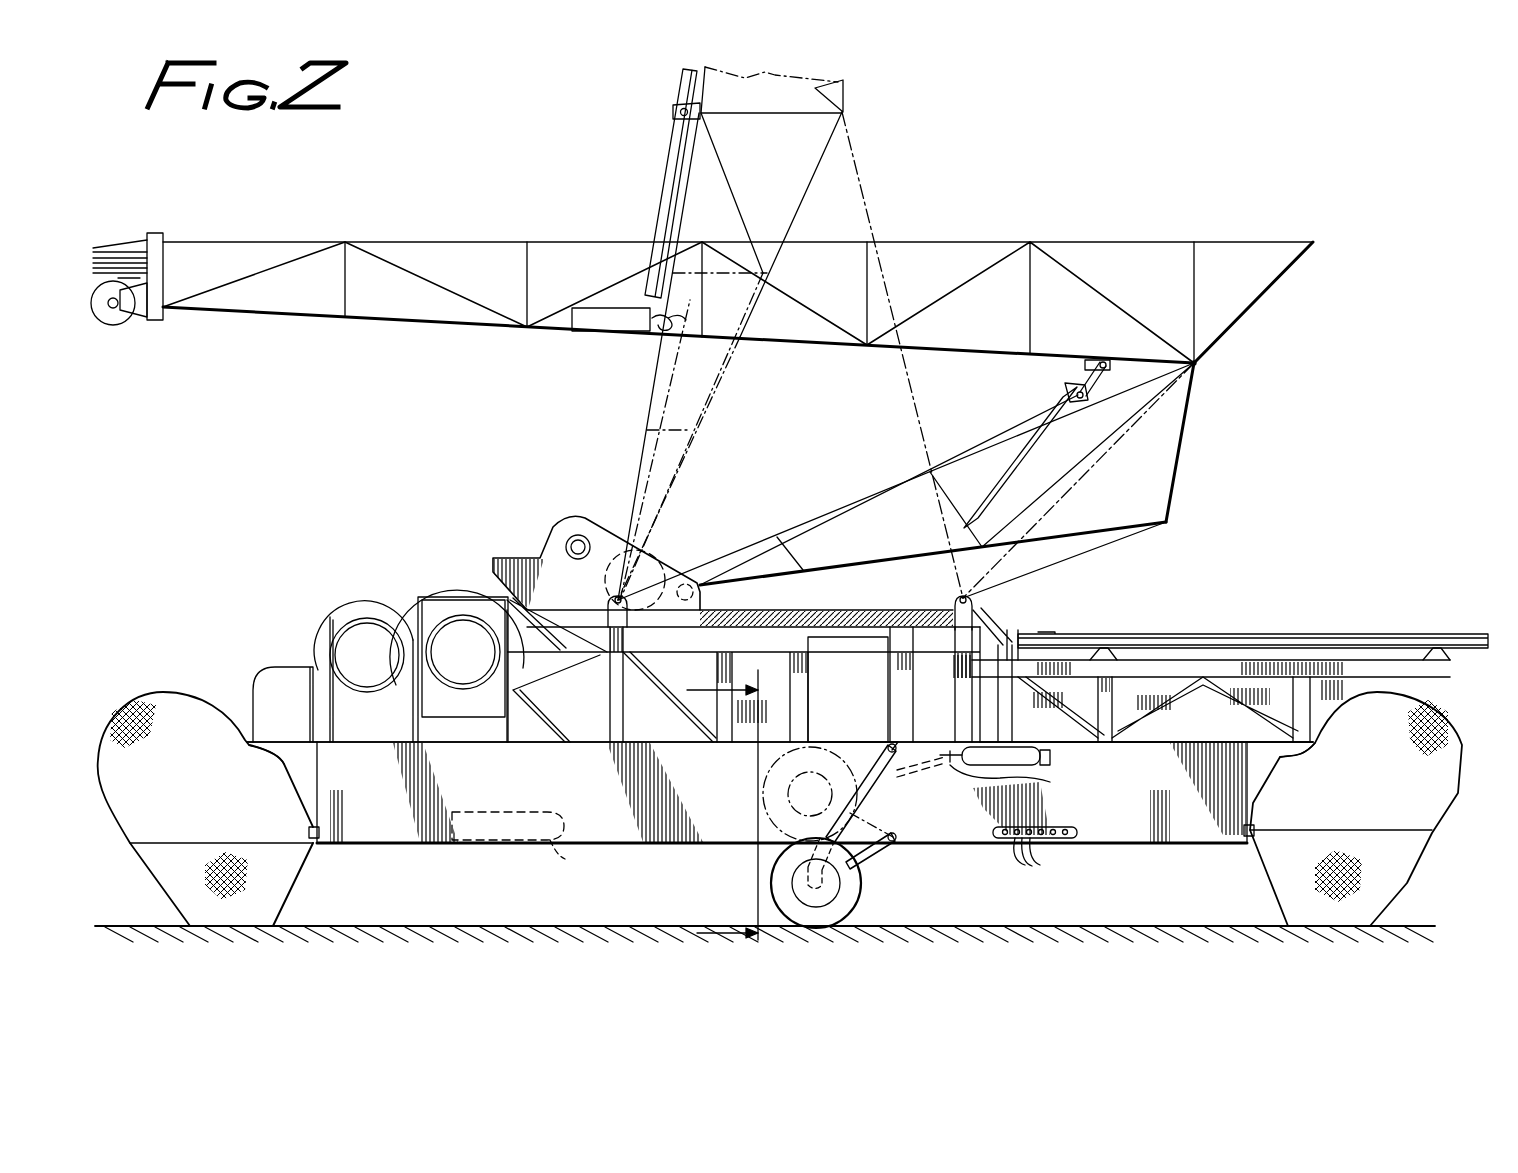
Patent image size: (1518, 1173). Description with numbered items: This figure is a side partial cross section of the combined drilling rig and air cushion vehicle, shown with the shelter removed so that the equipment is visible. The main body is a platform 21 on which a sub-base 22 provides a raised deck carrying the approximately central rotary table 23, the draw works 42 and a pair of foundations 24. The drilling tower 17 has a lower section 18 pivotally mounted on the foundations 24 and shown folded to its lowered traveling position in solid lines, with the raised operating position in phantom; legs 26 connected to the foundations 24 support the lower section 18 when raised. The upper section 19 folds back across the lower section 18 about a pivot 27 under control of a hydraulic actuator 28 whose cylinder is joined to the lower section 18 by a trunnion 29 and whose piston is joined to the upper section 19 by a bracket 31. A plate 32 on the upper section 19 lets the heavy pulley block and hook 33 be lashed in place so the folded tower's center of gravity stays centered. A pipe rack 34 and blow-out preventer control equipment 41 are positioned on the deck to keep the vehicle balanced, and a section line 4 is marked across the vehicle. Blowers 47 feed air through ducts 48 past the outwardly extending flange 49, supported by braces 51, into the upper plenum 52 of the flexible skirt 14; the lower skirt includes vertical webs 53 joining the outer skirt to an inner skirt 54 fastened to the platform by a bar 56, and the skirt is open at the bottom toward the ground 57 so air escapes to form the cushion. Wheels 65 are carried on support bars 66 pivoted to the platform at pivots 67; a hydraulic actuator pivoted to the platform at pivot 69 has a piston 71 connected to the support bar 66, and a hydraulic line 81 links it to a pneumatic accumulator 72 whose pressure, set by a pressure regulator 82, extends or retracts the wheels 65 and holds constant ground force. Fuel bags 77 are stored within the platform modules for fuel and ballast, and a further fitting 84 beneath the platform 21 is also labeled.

The section line 4- 4 is at (722, 811).
The flexible skirt 14 is at (1450, 812).
The drilling tower 17 is at (847, 102).
The lower section of the tower 18 is at (1182, 448).
The upper section of the tower 19 is at (1235, 243).
The platform 21 is at (1142, 845).
The sub-base 22 is at (965, 730).
The rotary table 23 is at (822, 640).
The foundations 24 is at (606, 598).
The legs 26 is at (872, 190).
The pivot 27 is at (1200, 365).
The hydraulic actuator 28 is at (658, 212).
The trunnion 29 is at (672, 112).
The bracket 31 is at (1090, 358).
The plate 32 is at (618, 330).
The pulley block and hook 33 is at (576, 330).
The pipe rack 34 is at (1478, 650).
The blow-out preventer control equipment 41 is at (775, 654).
The draw works 42 is at (555, 522).
The blowers 47 is at (395, 590).
The air duct 48 is at (275, 668).
The flange 49 is at (305, 750).
The braces 51 is at (283, 764).
The upper plenum 52 is at (180, 700).
The webs 53 is at (180, 854).
The inner skirt 54 is at (300, 886).
The bar 56 is at (305, 828).
The ground 57 is at (1427, 925).
The wheels 65 is at (812, 752).
The support bars 66 is at (862, 812).
The pivots 67 is at (898, 832).
The pivot 69 is at (908, 745).
The piston 71 is at (810, 794).
The pneumatic accumulator 72 is at (1040, 768).
The fuel bags 77 is at (525, 847).
The hydraulic line 81 is at (921, 782).
The pressure regulator 82 is at (1055, 757).
The mounting bracket 84 is at (1042, 867).